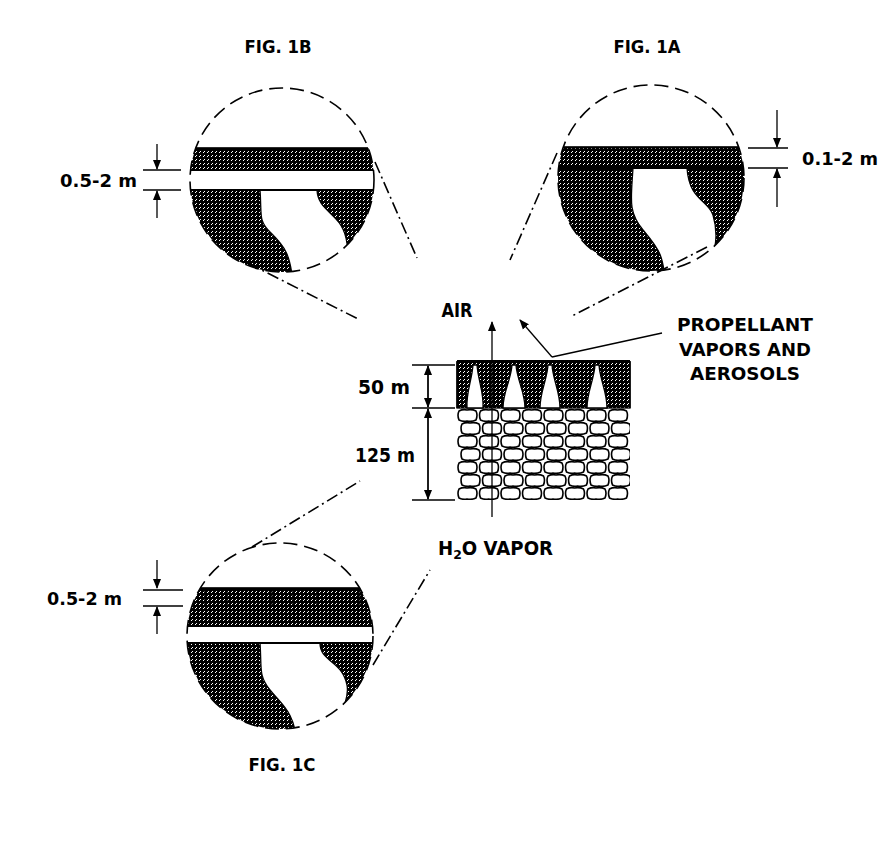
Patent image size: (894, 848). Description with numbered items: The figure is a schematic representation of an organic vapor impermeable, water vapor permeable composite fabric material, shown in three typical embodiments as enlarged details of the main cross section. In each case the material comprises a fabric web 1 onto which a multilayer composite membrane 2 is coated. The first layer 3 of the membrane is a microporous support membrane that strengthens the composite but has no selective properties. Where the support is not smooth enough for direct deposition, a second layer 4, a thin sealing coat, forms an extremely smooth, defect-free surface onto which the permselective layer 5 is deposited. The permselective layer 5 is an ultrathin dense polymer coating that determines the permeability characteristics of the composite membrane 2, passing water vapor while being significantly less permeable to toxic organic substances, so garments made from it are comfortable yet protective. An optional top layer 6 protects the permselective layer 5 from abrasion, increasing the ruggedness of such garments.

In FIG. 1, the fabric web 1 is at (625, 463).
In FIG. 1B, the multilayer composite membrane 2 is at (216, 109).
In FIG. 1A, the multilayer composite membrane 2 is at (704, 102).
In FIG. 1, the multilayer composite membrane 2 is at (457, 358).
In FIG. 1C, the multilayer composite membrane 2 is at (233, 556).
In FIG. 1B, the first layer 3 is at (206, 242).
In FIG. 1A, the first layer 3 is at (712, 255).
In FIG. 1, the first layer 3 is at (618, 388).
In FIG. 1C, the first layer 3 is at (198, 693).
In FIG. 1B, the second layer 4 is at (213, 194).
In FIG. 1C, the second layer 4 is at (186, 644).
In FIG. 1B, the permselective layer 5 is at (186, 151).
In FIG. 1A, the permselective layer 5 is at (715, 146).
In FIG. 1C, the permselective layer 5 is at (186, 622).
In FIG. 1C, the top layer 6 is at (219, 585).